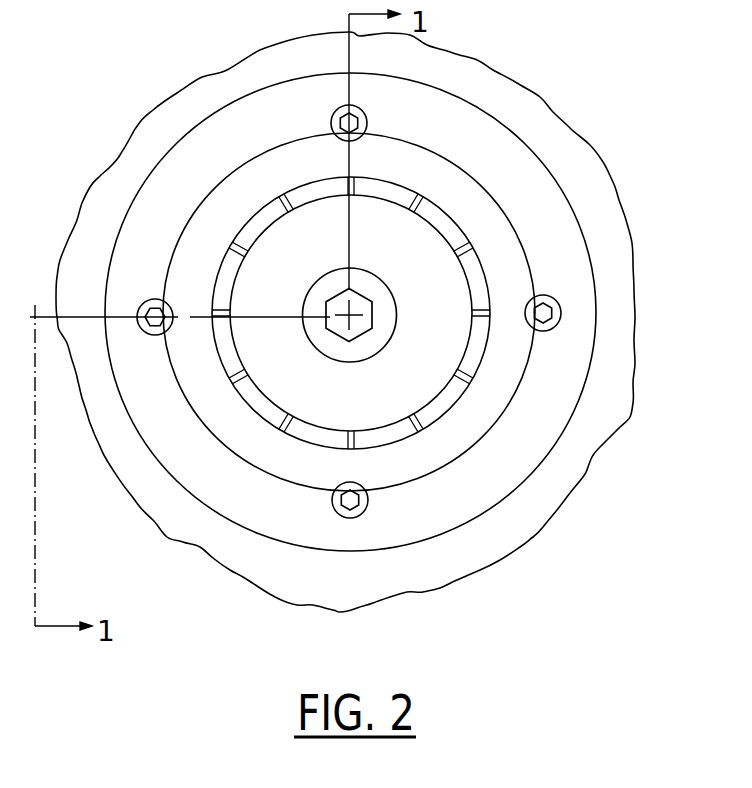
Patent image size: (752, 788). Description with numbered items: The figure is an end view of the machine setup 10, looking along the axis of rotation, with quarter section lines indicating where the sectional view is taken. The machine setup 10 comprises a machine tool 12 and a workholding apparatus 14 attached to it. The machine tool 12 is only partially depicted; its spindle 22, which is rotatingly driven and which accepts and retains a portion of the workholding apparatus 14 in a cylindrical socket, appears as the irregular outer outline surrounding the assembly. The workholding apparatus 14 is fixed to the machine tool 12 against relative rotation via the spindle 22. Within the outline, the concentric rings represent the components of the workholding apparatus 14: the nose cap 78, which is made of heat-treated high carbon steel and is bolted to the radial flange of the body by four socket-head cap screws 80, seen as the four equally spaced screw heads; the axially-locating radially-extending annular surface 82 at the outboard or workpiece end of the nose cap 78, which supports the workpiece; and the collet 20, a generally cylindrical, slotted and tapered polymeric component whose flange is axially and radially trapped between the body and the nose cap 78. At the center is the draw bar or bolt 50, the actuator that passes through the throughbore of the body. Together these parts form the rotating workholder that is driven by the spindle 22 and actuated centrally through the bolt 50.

The machine setup 10 is at (610, 66).
The machine tool 12 is at (135, 123).
The workholding apparatus 14 is at (562, 186).
The collet 20 is at (461, 402).
The spindle 22 is at (263, 57).
The draw bar or bolt 50 is at (397, 306).
The nose cap 78 is at (427, 97).
The socket-head cap screws 80 is at (151, 300).
The axially-locating radially-extending annular surface 82 is at (284, 153).